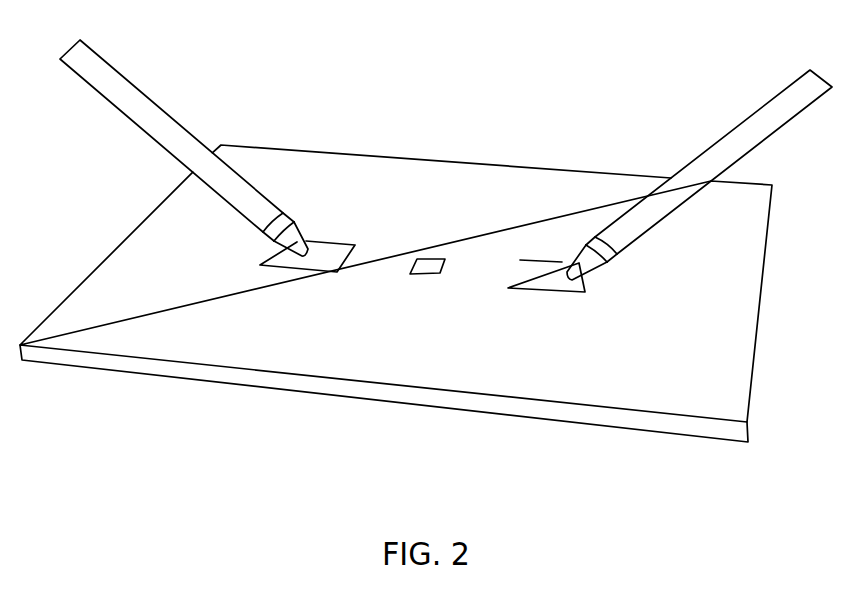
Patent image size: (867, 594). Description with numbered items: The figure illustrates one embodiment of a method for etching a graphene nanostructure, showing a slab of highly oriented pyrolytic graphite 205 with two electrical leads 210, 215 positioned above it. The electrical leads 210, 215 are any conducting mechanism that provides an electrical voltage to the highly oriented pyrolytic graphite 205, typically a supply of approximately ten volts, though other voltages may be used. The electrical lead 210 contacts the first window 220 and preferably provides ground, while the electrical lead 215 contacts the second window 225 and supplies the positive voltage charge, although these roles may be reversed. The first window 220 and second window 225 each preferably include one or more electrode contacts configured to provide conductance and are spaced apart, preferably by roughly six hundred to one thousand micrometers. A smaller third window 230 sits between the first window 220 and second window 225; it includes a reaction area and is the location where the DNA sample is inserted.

The highly oriented pyrolytic graphite 205 is at (463, 212).
The electrical lead 210 is at (130, 83).
The electrical lead 215 is at (738, 125).
The first window 220 is at (293, 270).
The second window 225 is at (550, 291).
The third window 230 is at (423, 273).